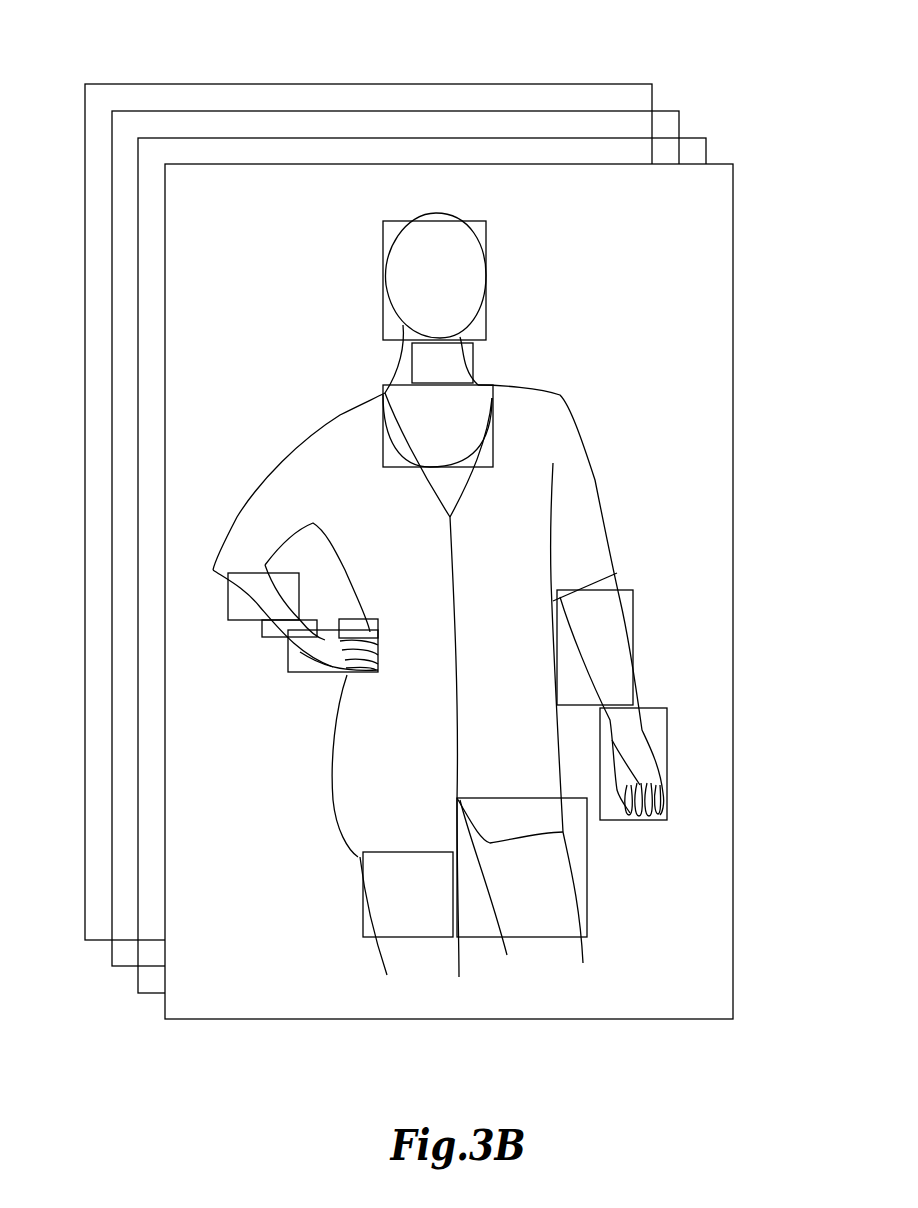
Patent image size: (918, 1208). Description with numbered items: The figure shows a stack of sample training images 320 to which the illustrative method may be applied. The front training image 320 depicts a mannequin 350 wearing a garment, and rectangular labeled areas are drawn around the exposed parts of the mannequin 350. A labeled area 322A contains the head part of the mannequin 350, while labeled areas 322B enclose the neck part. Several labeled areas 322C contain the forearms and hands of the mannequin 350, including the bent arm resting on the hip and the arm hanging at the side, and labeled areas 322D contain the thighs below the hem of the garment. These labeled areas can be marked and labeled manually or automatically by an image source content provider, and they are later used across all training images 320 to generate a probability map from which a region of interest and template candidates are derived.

The training image 320 is at (85, 137).
The labeled area 322A is at (405, 247).
The labeled areas 322B is at (430, 365).
The labeled areas 322C is at (227, 573).
The labeled areas 322D is at (388, 877).
The mannequin 350 is at (543, 430).